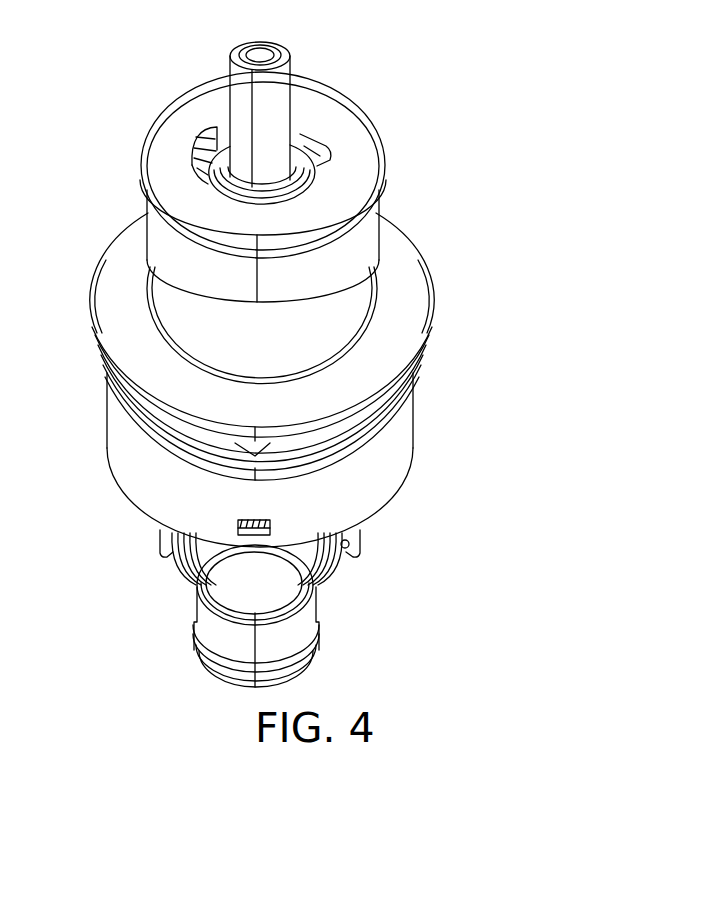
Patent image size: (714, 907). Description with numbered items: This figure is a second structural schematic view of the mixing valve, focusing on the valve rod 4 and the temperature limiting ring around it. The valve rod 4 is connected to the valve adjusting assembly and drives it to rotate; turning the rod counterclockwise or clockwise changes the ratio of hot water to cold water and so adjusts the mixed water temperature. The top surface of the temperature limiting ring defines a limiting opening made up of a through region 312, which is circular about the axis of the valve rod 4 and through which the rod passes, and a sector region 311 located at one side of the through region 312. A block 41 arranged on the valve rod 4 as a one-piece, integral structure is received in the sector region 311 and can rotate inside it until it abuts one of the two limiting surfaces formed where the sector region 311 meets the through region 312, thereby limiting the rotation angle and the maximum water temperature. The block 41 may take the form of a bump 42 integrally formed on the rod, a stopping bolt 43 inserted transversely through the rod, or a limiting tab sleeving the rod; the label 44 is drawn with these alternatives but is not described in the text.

The valve rod 4 is at (273, 97).
The sector region 311 is at (205, 188).
The through region 312 is at (312, 140).
The block 41 is at (317, 162).
The bump 42 is at (357, 192).
The stopping bolt 43 is at (384, 191).
The fourth ring member 44 is at (413, 190).